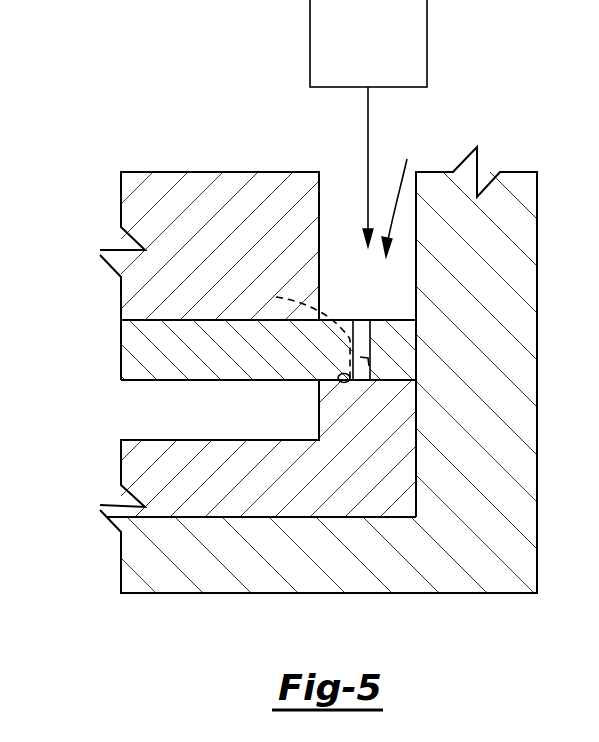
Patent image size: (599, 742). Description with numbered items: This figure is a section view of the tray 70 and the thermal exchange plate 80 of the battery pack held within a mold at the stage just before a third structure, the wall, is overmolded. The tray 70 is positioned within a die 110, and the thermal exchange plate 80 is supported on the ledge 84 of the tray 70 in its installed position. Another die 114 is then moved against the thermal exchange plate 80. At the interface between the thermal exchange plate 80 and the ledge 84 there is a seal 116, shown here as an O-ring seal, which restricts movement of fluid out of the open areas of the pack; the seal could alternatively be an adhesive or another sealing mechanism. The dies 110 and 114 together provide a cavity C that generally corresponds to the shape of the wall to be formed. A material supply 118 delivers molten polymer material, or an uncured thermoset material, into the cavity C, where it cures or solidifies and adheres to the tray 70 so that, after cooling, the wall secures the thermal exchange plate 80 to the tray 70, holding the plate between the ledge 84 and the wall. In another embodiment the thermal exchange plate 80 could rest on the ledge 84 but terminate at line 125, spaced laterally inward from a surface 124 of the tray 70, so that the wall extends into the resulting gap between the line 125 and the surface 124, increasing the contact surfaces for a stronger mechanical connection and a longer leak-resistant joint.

The tray 70 is at (163, 459).
The thermal exchange plate 80 is at (147, 351).
The ledge 84 is at (362, 357).
The die 110 is at (403, 563).
The die 114 is at (153, 191).
The seal 116 is at (342, 376).
The material supply 118 is at (310, 43).
The surface 124 is at (369, 366).
The line 125 is at (295, 332).
The cavity C is at (400, 196).